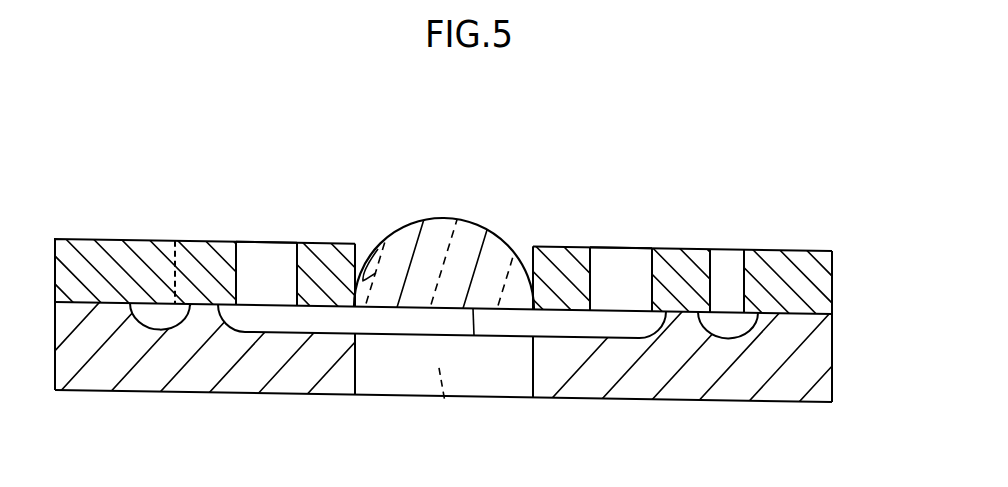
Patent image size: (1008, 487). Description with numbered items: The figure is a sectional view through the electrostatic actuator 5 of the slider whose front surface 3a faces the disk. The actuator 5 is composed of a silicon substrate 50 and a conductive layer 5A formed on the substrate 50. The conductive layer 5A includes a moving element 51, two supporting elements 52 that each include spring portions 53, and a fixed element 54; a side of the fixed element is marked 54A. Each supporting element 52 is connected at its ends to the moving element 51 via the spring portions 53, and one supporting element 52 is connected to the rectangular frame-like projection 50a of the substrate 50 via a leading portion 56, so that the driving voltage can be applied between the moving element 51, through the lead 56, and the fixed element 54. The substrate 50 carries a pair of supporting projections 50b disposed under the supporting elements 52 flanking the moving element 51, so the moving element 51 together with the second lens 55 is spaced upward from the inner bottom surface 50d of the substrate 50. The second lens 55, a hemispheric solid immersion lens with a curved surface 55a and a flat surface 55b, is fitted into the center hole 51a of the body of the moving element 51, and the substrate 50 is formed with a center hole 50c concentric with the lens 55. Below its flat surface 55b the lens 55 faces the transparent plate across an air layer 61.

The electrostatic actuator 5 is at (717, 237).
The conductive layer 5A is at (98, 233).
The front surface 3a is at (603, 397).
The silicon substrate 50 is at (253, 398).
The frame-like projection 50a is at (820, 322).
The supporting projections 50b is at (197, 311).
The center hole 50c is at (532, 372).
The inner bottom surface 50d is at (342, 334).
The moving element 51 is at (557, 245).
The center hole 51a is at (377, 247).
The supporting elements 52 is at (205, 250).
The spring portions 53 is at (267, 250).
The fixed element 54 is at (792, 250).
The insulating layer side face 54A is at (822, 283).
The second lens 55 is at (489, 222).
The curved surface 55a is at (437, 215).
The flat surface 55b is at (474, 335).
The leading portion 56 is at (125, 239).
The air layer 61 is at (445, 403).